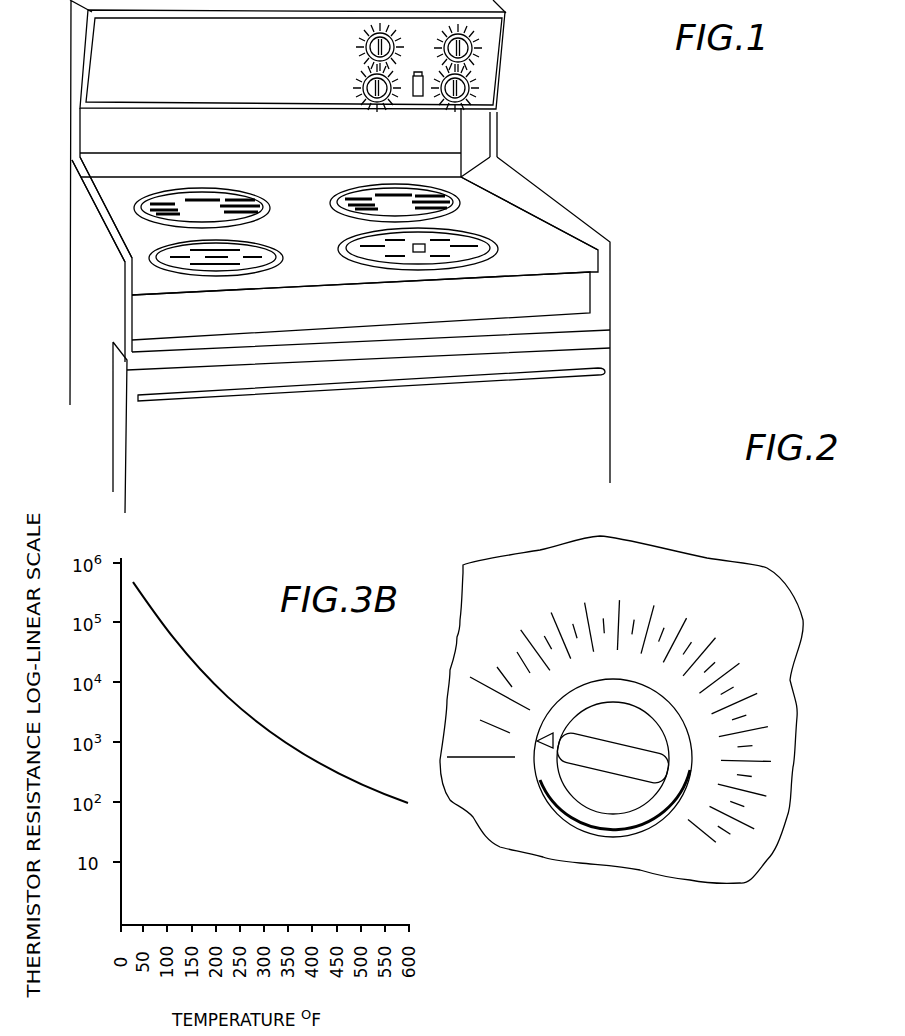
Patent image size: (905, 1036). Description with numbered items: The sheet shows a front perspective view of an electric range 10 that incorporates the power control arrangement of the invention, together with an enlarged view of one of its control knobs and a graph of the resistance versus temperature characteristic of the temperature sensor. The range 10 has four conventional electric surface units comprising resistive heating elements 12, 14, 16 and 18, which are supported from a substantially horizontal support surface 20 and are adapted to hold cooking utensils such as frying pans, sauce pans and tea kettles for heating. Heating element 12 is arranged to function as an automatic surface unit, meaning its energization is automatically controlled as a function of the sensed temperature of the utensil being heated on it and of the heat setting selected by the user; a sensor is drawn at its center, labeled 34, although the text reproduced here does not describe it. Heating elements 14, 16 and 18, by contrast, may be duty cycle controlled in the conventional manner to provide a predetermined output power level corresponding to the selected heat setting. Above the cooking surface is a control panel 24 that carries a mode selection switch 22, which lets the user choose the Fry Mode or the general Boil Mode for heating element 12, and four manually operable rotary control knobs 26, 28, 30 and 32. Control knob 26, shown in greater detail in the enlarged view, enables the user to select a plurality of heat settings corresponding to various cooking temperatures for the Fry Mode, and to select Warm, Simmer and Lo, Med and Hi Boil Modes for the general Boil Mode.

In FIG. 1, the electric range 10 is at (557, 160).
In FIG. 1, the resistive heating element 12 is at (342, 247).
In FIG. 1, the resistive heating element 14 is at (340, 198).
In FIG. 1, the resistive heating element 16 is at (198, 190).
In FIG. 1, the resistive heating element 18 is at (272, 278).
In FIG. 1, the support surface 20 is at (538, 247).
In FIG. 1, the mode selection switch 22 is at (416, 100).
In FIG. 1, the control panel 24 is at (241, 65).
In FIG. 1, the control knob 26 is at (478, 88).
In FIG. 2, the control knob 26 is at (531, 777).
In FIG. 1, the control knob 28 is at (483, 44).
In FIG. 1, the control knob 30 is at (362, 44).
In FIG. 1, the control knob 32 is at (360, 84).
In FIG. 1, the temperature sensor 34 is at (428, 247).